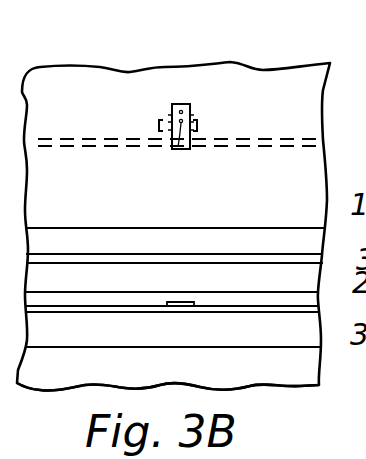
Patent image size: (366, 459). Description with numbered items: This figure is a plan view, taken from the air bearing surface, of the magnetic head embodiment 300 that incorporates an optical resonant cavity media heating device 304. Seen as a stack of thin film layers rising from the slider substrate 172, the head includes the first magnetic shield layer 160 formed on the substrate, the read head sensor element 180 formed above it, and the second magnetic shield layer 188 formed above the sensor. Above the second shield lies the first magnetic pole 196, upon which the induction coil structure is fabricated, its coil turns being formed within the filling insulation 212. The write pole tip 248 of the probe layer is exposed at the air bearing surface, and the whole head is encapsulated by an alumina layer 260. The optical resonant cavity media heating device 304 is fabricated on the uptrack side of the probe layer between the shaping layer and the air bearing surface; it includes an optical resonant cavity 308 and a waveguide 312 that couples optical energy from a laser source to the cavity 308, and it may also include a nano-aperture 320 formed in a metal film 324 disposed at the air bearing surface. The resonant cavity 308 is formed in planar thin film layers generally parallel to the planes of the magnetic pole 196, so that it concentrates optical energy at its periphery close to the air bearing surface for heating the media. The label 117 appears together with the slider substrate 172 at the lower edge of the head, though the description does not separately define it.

The magnetic head embodiment 300 is at (117, 58).
The optical resonant cavity media heating device 304 is at (177, 92).
The alumina layer 260 is at (275, 78).
The metal film 324 is at (173, 114).
The write pole tip 248 is at (190, 104).
The optical resonant cavity 308 is at (200, 121).
The nano-aperture 320 is at (181, 150).
The waveguide 312 is at (269, 148).
The filling insulation 212 is at (312, 211).
The first magnetic pole (P1) 196 is at (233, 204).
The read head sensor element 180 is at (178, 300).
The second magnetic shield layer (S2) 188 is at (252, 279).
The first magnetic shield layer (S1) 160 is at (228, 332).
The bottom surface 117 is at (191, 404).
The slider substrate 172 is at (275, 381).